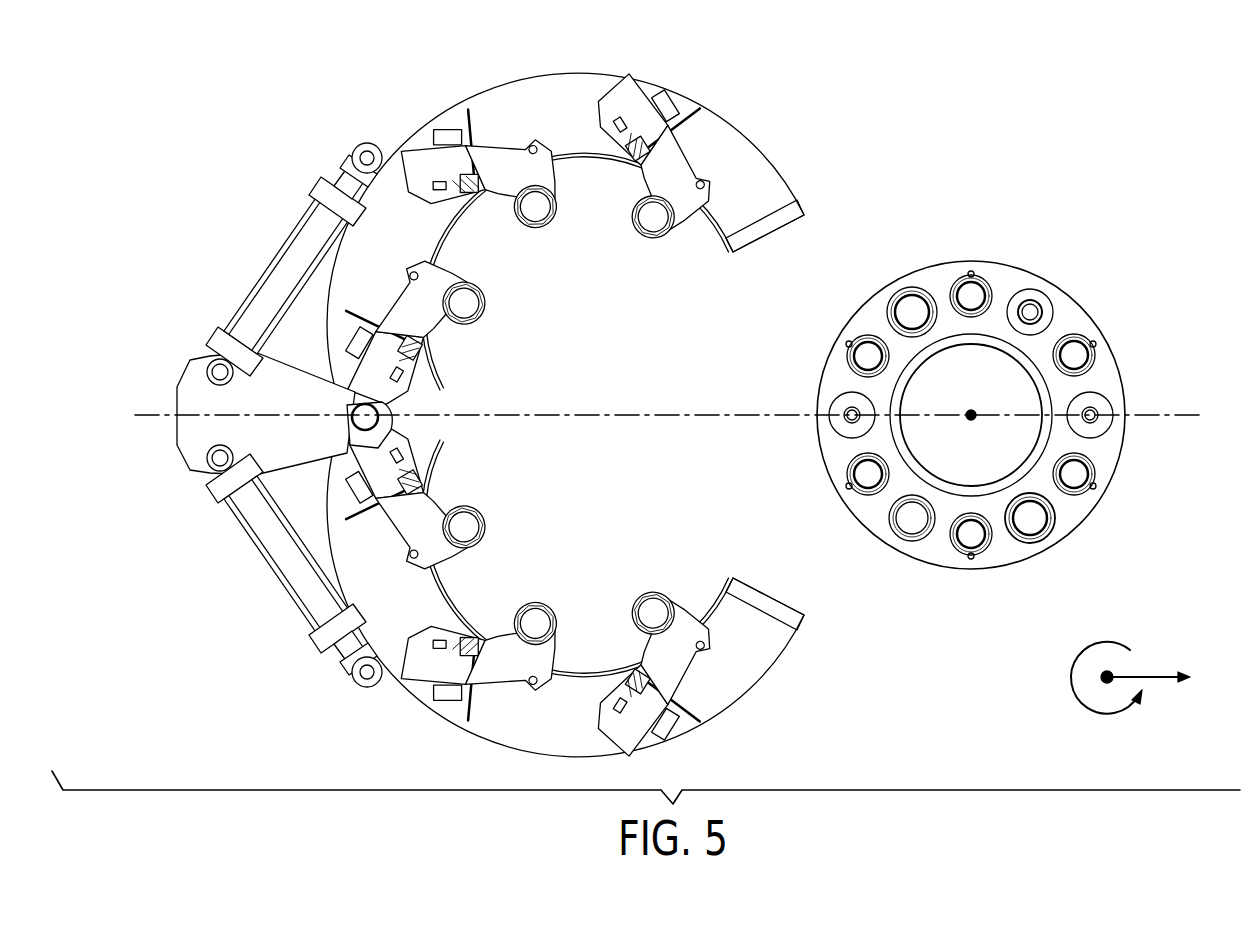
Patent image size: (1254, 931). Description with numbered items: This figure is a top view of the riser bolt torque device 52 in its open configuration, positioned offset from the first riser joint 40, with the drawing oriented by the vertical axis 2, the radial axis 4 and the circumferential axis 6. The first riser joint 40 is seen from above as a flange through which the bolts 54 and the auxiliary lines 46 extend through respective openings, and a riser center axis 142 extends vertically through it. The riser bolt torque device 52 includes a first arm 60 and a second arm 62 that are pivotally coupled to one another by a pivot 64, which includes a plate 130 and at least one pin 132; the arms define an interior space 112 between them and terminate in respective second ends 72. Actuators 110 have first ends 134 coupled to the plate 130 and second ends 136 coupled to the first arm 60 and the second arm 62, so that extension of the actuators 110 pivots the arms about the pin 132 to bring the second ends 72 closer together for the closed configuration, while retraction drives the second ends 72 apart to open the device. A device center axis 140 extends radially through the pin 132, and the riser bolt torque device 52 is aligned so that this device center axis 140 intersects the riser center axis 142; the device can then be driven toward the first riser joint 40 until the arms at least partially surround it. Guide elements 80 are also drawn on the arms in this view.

The vertical axis 2 is at (1105, 675).
The radial axis 4 is at (1155, 675).
The circumferential axis 6 is at (1113, 712).
The first riser joint 40 is at (1125, 445).
The auxiliary lines 46 is at (895, 300).
The riser bolt torque device 52 is at (742, 97).
The bolts 54 is at (968, 297).
The first arm 60 is at (760, 144).
The second arm 62 is at (706, 734).
The pivot 64 is at (173, 328).
The second ends 72 is at (770, 231).
The rollers 80 is at (537, 208).
The actuators 110 is at (290, 262).
The interior space 112 is at (592, 314).
The plate 130 is at (176, 400).
The pin 132 is at (358, 424).
The first ends 134 is at (216, 372).
The second ends 136 is at (362, 152).
The device center axis 140 is at (665, 414).
The riser center axis 142 is at (971, 414).